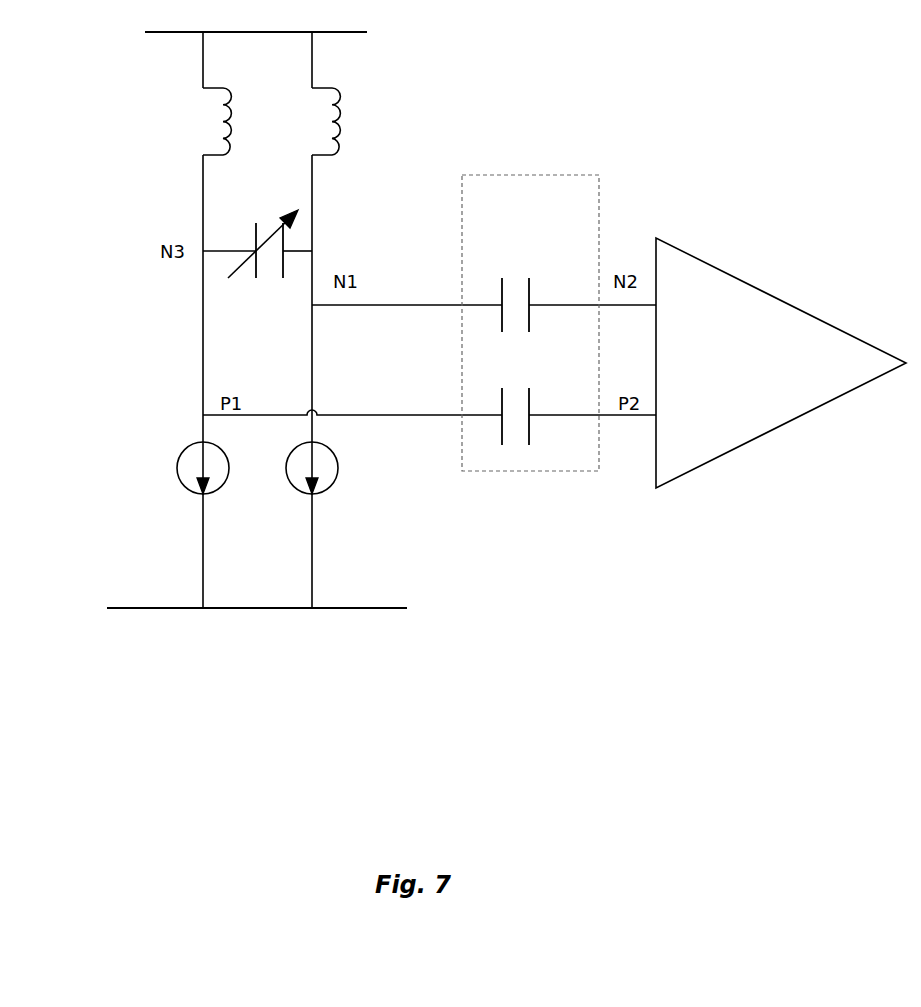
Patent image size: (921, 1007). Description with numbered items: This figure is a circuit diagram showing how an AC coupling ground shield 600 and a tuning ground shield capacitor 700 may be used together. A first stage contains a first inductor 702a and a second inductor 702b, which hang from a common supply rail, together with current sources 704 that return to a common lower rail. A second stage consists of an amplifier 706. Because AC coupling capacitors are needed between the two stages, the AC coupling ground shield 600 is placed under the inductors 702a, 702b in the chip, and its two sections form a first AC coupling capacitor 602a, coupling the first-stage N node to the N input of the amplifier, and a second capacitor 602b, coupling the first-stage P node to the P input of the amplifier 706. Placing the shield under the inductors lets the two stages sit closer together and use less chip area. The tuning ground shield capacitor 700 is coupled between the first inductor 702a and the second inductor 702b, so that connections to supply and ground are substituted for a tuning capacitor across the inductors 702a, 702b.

The first inductor 702a is at (193, 138).
The second inductor 702b is at (318, 138).
The tuning ground shield capacitor 700 is at (280, 208).
The AC coupling ground shield 600 is at (550, 214).
The first AC coupling capacitor 602a is at (532, 251).
The second capacitor 602b is at (550, 371).
The current sources 704 is at (144, 480).
The amplifier 706 is at (777, 365).